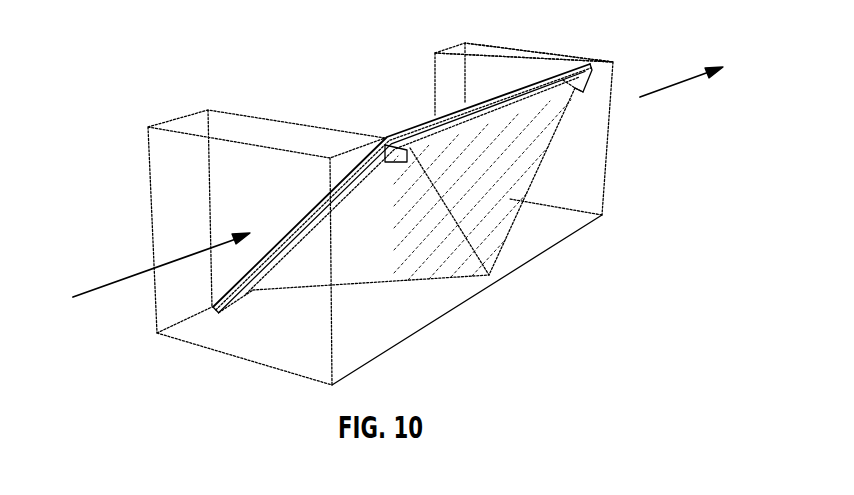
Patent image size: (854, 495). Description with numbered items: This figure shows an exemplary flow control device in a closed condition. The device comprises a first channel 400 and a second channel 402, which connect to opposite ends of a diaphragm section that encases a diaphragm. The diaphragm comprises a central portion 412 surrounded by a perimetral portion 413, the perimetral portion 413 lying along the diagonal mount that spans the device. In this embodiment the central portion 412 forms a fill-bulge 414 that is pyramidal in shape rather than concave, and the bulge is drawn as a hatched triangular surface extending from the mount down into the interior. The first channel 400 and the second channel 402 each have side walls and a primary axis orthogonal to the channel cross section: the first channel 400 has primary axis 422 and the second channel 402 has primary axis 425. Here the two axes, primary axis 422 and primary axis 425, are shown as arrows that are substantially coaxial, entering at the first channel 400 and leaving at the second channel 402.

The first channel 400 is at (167, 200).
The second channel 402 is at (567, 55).
The central portion 412 is at (374, 256).
The perimetral portion 413 is at (445, 112).
The fill-bulge 414 is at (505, 198).
The primary axis 422 is at (103, 288).
The primary axis 425 is at (668, 88).